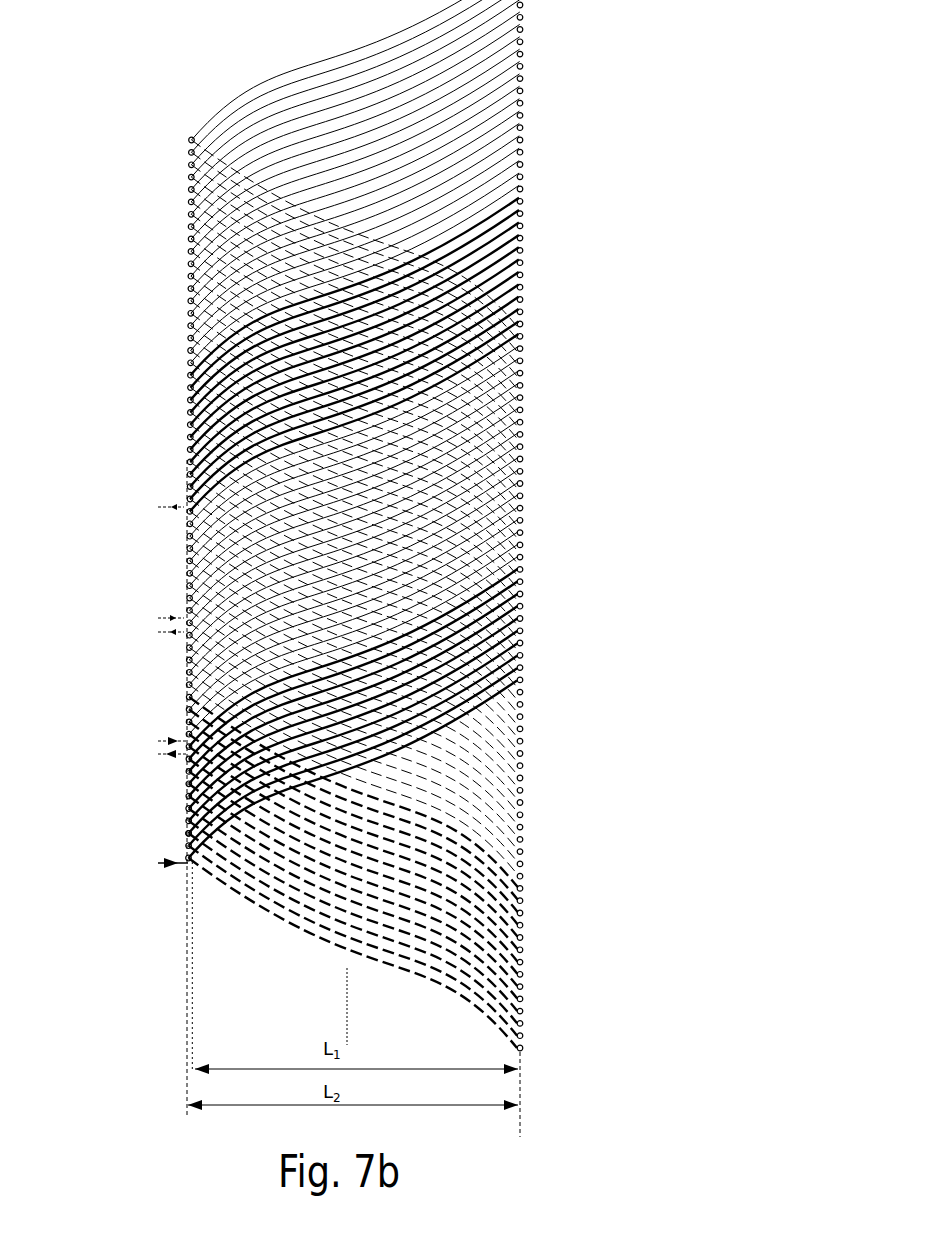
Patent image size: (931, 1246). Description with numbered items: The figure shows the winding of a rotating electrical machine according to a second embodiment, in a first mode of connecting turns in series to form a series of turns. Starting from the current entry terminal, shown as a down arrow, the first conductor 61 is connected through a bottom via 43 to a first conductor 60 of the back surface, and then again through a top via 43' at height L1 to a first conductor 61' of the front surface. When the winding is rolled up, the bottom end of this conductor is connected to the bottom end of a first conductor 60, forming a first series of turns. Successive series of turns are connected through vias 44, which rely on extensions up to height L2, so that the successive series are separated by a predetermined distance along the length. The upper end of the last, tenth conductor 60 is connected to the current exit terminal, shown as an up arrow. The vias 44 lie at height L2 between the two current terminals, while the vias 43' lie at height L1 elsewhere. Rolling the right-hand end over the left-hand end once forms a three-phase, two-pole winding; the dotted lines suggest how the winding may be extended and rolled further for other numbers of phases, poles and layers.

The bottom via 43 is at (586, 526).
The top via 43' is at (124, 499).
The via 44 is at (188, 835).
The conductor of the back surface 60 is at (437, 607).
The first conductor 61 is at (319, 872).
The first conductor of the front surface 61' is at (411, 355).